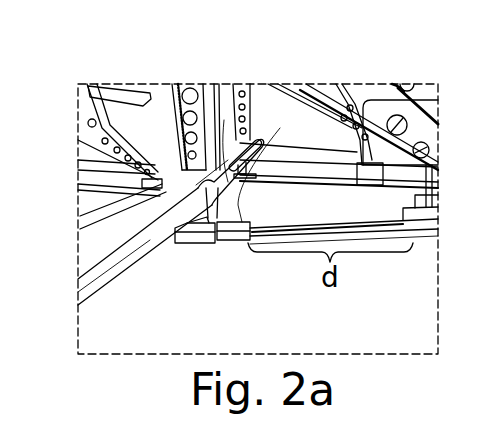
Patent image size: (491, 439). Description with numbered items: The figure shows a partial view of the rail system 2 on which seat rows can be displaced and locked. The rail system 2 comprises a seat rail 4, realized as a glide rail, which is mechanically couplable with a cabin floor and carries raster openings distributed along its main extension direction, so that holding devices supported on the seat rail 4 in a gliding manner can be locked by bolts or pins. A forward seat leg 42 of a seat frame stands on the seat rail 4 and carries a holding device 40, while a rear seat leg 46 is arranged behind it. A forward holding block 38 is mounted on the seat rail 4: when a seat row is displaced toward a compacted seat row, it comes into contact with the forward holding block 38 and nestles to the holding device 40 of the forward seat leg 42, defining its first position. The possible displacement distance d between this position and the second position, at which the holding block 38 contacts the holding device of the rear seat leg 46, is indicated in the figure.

The rail system 2 is at (398, 72).
The seat rail 4 is at (167, 234).
The forward holding block 38 is at (261, 150).
The holding device 40 is at (222, 150).
The forward seat leg 42 is at (176, 100).
The rear seat leg 46 is at (90, 134).